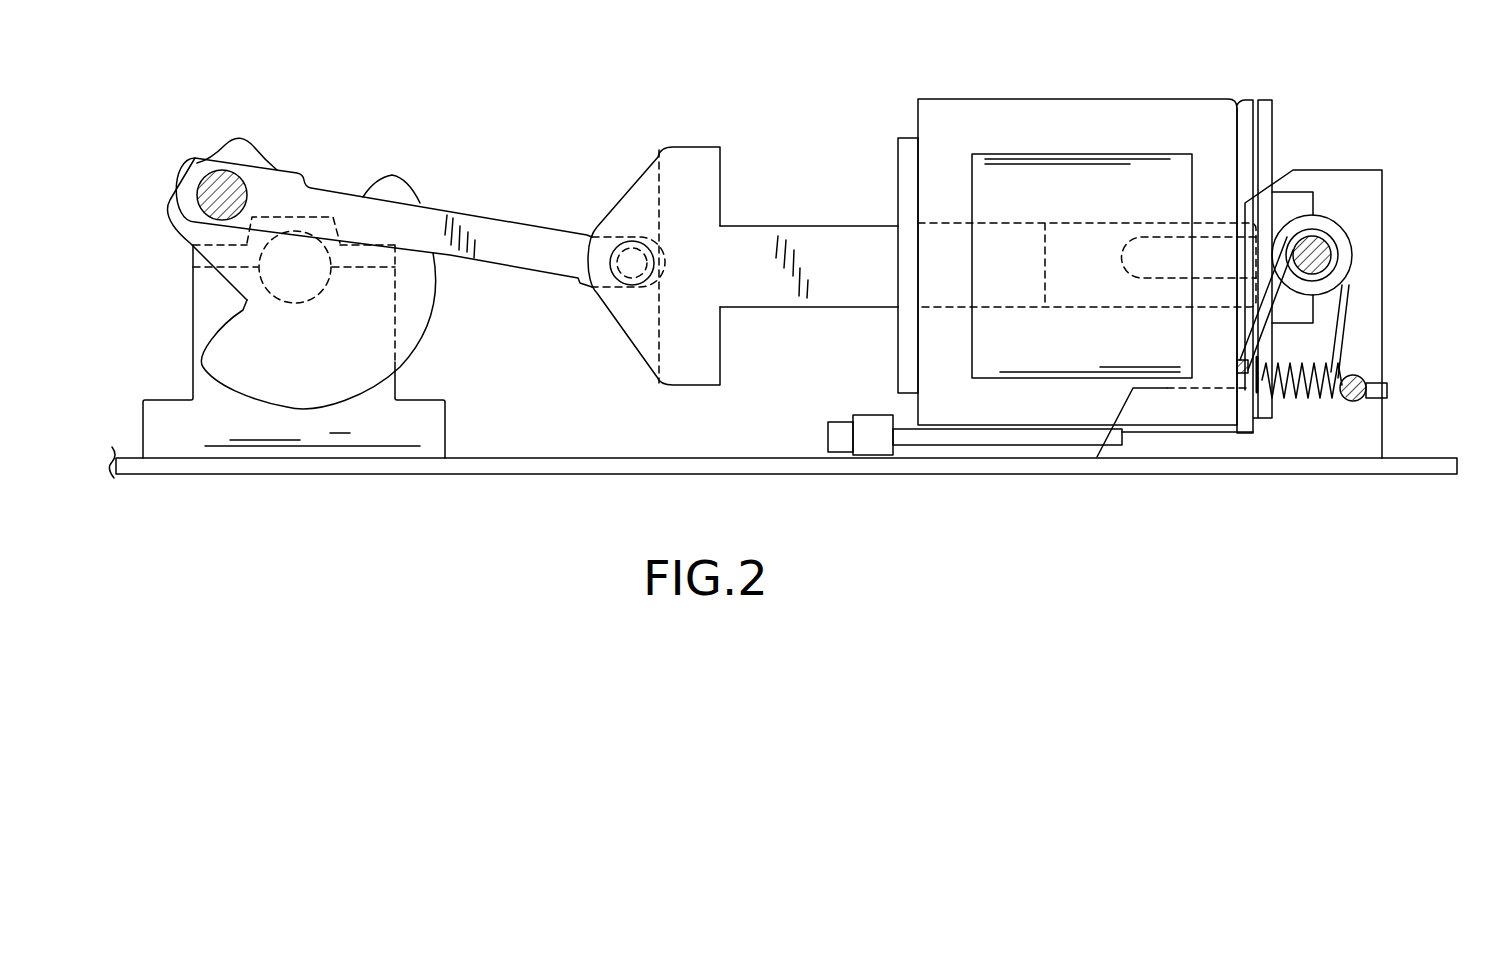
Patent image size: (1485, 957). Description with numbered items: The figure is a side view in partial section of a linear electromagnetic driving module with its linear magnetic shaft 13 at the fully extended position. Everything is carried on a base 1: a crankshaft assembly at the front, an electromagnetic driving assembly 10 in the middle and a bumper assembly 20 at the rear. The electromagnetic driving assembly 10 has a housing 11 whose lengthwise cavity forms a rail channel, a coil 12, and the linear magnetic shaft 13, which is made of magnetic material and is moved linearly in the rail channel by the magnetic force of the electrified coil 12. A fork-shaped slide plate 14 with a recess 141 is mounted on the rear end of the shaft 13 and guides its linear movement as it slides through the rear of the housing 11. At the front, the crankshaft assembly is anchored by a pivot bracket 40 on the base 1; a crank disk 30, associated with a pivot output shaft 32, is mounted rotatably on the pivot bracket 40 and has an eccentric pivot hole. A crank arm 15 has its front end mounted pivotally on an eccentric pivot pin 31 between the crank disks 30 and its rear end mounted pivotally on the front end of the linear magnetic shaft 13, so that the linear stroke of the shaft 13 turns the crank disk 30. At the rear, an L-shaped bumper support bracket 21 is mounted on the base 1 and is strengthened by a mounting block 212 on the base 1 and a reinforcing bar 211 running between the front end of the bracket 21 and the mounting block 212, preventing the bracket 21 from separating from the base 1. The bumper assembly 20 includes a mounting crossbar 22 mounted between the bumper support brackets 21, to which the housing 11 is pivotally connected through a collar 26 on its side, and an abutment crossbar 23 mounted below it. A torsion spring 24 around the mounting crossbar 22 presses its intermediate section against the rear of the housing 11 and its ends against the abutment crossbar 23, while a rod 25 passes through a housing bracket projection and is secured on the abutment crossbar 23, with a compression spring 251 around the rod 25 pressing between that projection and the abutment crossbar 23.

The base 1 is at (537, 472).
The electromagnetic driving assembly 10 is at (1031, 267).
The housing 11 is at (988, 112).
The coil 12 is at (1082, 170).
The linear magnetic shaft 13 is at (778, 232).
The slide plate 14 is at (1137, 288).
The recess 141 is at (1160, 245).
The crank arm 15 is at (463, 227).
The bumper assembly 20 is at (1348, 277).
The bumper support bracket 21 is at (1355, 198).
The reinforcing bar 211 is at (988, 435).
The mounting block 212 is at (872, 430).
The mounting crossbar 22 is at (1325, 247).
The abutment crossbar 23 is at (1368, 406).
The torsion spring 24 is at (1342, 316).
The rod 25 is at (1380, 390).
The compression spring 251 is at (1297, 390).
The collar 26 is at (1340, 230).
The crank disk 30 is at (400, 328).
The eccentric pivot pin 31 is at (207, 176).
The pivot output shaft 32 is at (300, 290).
The pivot bracket 40 is at (212, 312).